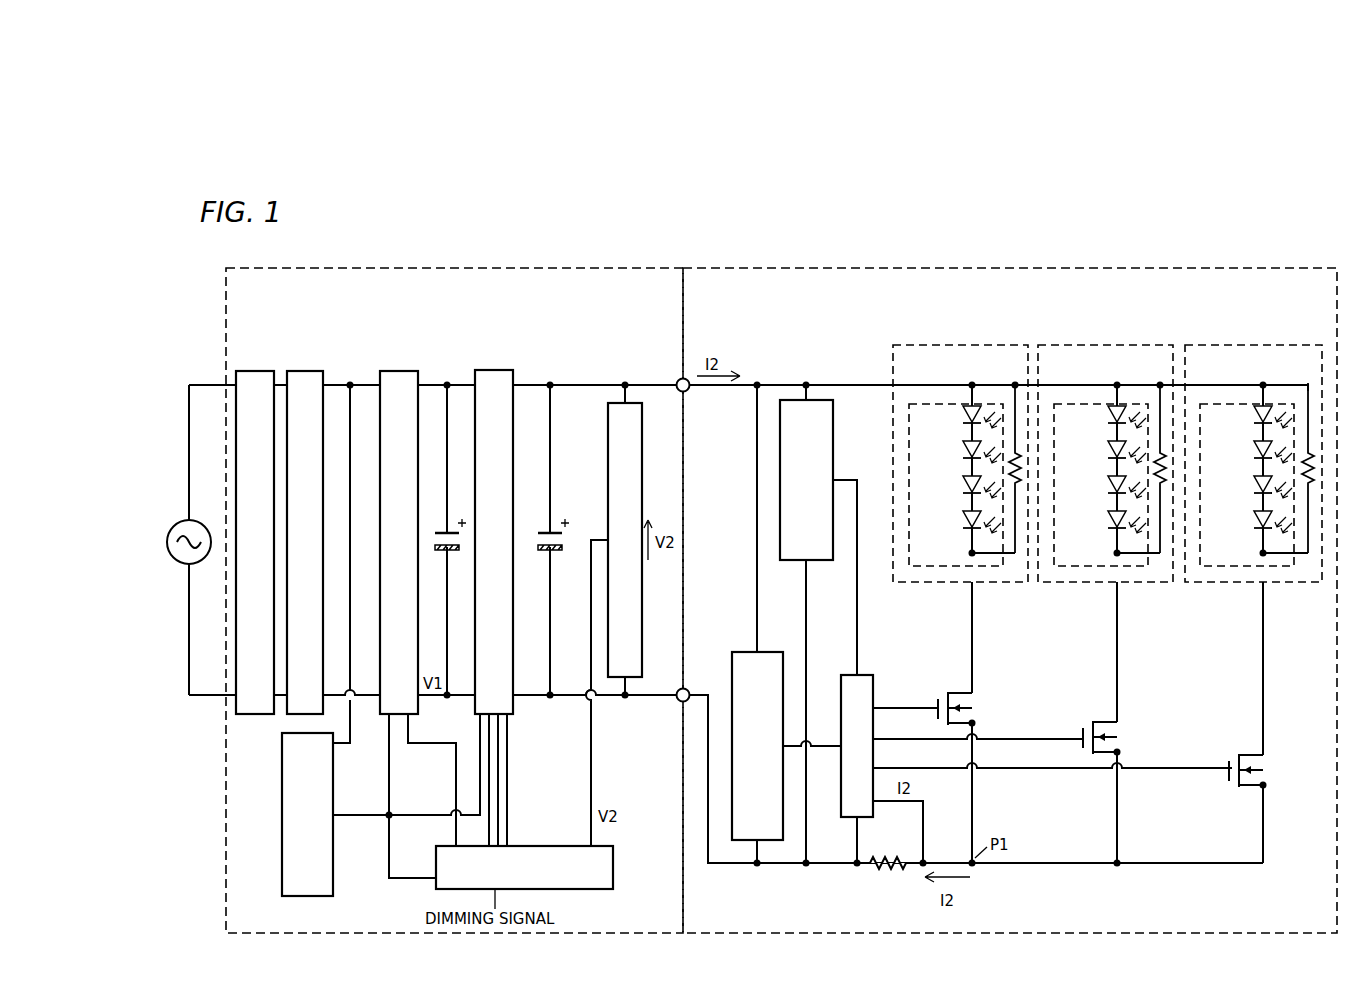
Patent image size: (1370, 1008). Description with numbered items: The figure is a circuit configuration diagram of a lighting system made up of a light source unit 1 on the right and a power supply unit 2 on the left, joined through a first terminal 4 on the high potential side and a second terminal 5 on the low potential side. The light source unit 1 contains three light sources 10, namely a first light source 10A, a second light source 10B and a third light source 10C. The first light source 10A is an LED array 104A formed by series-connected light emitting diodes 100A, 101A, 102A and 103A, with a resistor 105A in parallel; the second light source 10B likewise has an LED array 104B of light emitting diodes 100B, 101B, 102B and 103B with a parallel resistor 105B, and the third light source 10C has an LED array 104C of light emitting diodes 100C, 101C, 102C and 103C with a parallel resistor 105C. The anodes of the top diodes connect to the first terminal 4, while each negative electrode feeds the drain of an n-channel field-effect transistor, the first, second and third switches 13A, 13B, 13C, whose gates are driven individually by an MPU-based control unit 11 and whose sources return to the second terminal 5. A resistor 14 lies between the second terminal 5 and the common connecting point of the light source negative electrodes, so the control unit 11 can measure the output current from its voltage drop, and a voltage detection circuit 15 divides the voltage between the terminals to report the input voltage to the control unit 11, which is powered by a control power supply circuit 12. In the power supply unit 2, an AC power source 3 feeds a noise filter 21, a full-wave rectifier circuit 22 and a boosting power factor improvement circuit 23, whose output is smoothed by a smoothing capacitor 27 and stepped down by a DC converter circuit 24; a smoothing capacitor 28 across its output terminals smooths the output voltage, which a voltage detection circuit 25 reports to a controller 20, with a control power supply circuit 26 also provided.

The light source unit 1 is at (1011, 268).
The power supply unit 2 is at (426, 268).
The AC power source 3 is at (176, 528).
The first terminal 4 is at (678, 380).
The second terminal 5 is at (678, 702).
The light sources 10 is at (1103, 461).
The first light source 10A is at (956, 461).
The second light source 10B is at (1101, 461).
The third light source 10C is at (1249, 461).
The control unit 11 is at (873, 682).
The control power supply circuit 12 is at (833, 438).
The first switch 13A is at (977, 703).
The second switch 13B is at (1123, 737).
The third switch 13C is at (1270, 768).
The resistor 14 is at (890, 879).
The voltage detection circuit 15 is at (732, 660).
The controller 20 is at (546, 846).
The noise filter 21 is at (253, 370).
The full-wave rectifier circuit 22 is at (304, 370).
The power factor improvement circuit 23 is at (397, 370).
The DC converter circuit 24 is at (494, 370).
The voltage detection circuit 25 is at (608, 438).
The control power supply circuit 26 is at (282, 820).
The smoothing capacitor 27 is at (443, 528).
The smoothing capacitor 28 is at (544, 528).
The light emitting diode 100A is at (960, 523).
The light emitting diode 101A is at (960, 488).
The light emitting diode 102A is at (960, 453).
The light emitting diode 103A is at (960, 418).
The LED array 104A is at (962, 505).
The resistor 105A is at (1013, 455).
The light emitting diode 100B is at (1105, 523).
The light emitting diode 101B is at (1105, 488).
The light emitting diode 102B is at (1105, 453).
The light emitting diode 103B is at (1105, 418).
The LED array 104B is at (1107, 505).
The resistor 105B is at (1158, 455).
The light emitting diode 100C is at (1251, 523).
The light emitting diode 101C is at (1251, 488).
The light emitting diode 102C is at (1251, 453).
The light emitting diode 103C is at (1251, 418).
The LED array 104C is at (1254, 505).
The resistor 105C is at (1306, 455).